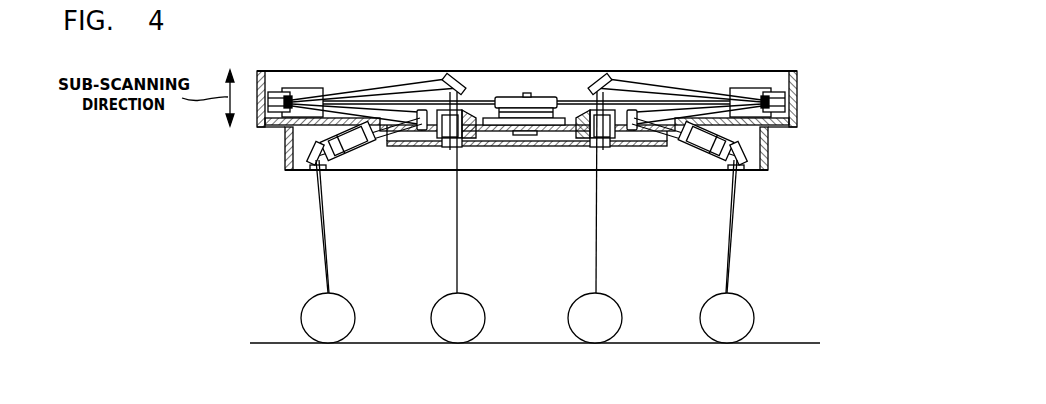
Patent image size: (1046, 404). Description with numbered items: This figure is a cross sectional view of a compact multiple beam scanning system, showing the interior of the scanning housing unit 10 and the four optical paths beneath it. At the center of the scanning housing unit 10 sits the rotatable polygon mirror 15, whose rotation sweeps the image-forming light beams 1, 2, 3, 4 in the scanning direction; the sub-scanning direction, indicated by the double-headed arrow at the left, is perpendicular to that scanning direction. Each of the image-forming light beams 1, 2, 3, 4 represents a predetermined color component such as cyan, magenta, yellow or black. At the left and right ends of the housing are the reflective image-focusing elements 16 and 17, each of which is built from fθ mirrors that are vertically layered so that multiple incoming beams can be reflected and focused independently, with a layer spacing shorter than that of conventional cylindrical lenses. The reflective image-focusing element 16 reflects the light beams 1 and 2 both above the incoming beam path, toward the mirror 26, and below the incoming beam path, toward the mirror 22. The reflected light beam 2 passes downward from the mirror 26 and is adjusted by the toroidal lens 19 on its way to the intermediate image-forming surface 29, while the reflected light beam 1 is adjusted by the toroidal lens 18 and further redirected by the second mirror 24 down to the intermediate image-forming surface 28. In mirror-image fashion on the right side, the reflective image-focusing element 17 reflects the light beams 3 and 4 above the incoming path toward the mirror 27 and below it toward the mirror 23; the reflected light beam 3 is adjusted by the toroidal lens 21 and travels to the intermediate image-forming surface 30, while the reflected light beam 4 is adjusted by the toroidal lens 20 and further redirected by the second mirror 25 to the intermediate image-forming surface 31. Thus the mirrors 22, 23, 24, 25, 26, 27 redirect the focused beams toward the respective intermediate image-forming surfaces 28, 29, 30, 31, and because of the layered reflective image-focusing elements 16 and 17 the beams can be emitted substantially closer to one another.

The scanning housing unit 10 is at (797, 90).
The rotatable polygon mirror 15 is at (497, 100).
The reflective image-focusing element 16 is at (306, 88).
The reflective image-focusing element 17 is at (748, 92).
The toroidal lens 18 is at (343, 152).
The toroidal lens 19 is at (432, 139).
The toroidal lens 20 is at (700, 152).
The toroidal lens 21 is at (620, 139).
The mirror 22 is at (428, 130).
The mirror 23 is at (641, 130).
The second mirror 24 is at (300, 146).
The second mirror 25 is at (762, 143).
The mirror 26 is at (458, 78).
The mirror 27 is at (595, 78).
The image-forming light beam 1 is at (322, 238).
The image-forming light beam 2 is at (455, 238).
The image-forming light beam 3 is at (595, 240).
The image-forming light beam 4 is at (727, 238).
The intermediate image-forming surface 28 is at (345, 300).
The intermediate image-forming surface 29 is at (475, 300).
The intermediate image-forming surface 30 is at (612, 300).
The intermediate image-forming surface 31 is at (745, 300).